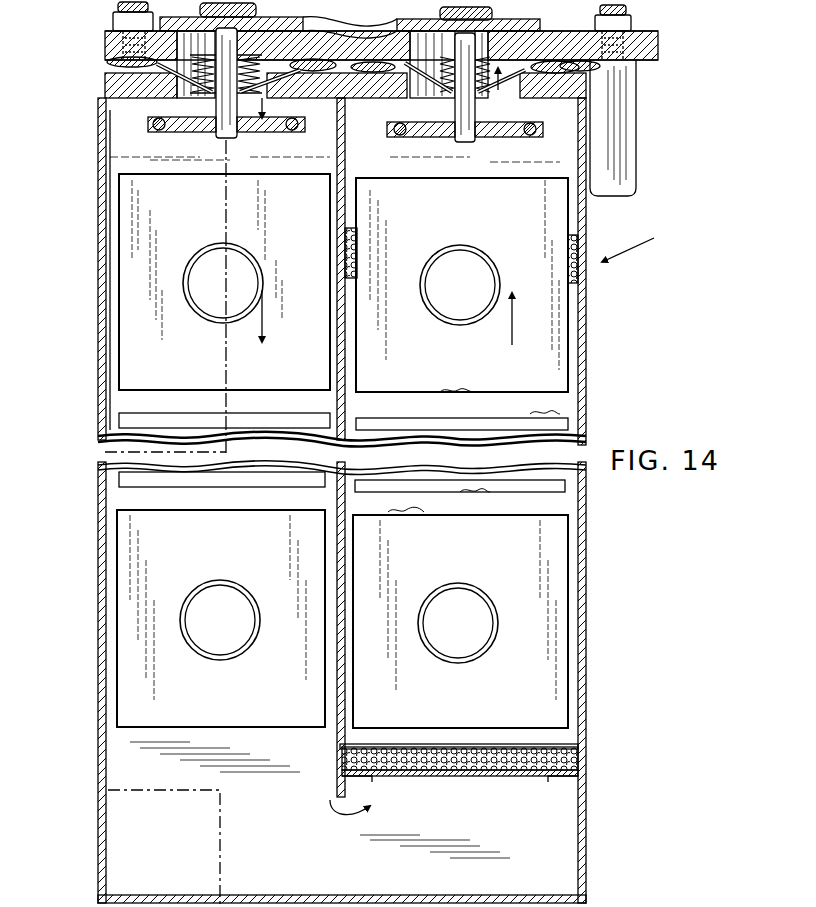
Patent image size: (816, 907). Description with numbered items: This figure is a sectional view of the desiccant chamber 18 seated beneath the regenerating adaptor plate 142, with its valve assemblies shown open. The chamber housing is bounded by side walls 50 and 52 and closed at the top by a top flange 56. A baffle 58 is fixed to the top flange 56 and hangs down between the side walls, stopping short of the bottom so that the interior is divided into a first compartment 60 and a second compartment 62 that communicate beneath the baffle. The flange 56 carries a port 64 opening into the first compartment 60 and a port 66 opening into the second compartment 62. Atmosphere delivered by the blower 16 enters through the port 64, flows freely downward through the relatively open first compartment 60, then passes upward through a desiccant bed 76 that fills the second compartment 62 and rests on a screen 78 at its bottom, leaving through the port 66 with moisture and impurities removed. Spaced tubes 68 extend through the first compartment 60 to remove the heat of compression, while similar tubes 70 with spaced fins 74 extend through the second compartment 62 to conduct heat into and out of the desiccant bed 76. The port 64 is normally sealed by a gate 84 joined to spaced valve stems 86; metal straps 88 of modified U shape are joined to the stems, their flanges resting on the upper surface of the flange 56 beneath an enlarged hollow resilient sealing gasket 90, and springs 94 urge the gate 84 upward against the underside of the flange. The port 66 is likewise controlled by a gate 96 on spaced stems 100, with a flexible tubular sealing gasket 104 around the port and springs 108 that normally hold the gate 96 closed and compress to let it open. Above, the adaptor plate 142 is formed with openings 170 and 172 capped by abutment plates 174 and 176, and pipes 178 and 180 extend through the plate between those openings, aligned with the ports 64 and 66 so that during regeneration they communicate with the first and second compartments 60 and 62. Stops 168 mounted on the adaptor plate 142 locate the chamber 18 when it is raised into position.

The blower 16 is at (200, 10).
The desiccant chamber 18 is at (420, 565).
The side wall 50 is at (586, 322).
The side wall 52 is at (98, 175).
The top flange 56 is at (110, 82).
The baffle 58 is at (337, 200).
The first compartment 60 is at (110, 235).
The second compartment 62 is at (550, 745).
The port 64 is at (175, 80).
The port 66 is at (520, 95).
The tubes 68 is at (205, 317).
The tubes 70 is at (445, 322).
The fins 74 is at (563, 375).
The desiccant bed 76 is at (578, 282).
The screen 78 is at (500, 776).
The gate 84 is at (275, 132).
The valve stems 86 is at (235, 138).
The metal straps 88 is at (200, 93).
The sealing gasket 90 is at (107, 62).
The springs 94 is at (200, 98).
The gate 96 is at (410, 137).
The stems 100 is at (465, 142).
The sealing gasket 104 is at (600, 72).
The springs 108 is at (475, 40).
The adaptor plate 142 is at (658, 42).
The stops 168 is at (625, 118).
The openings 170 is at (113, 26).
The openings 172 is at (420, 19).
The abutment plate 174 is at (330, 33).
The abutment plate 176 is at (595, 22).
The pipe 178 is at (320, 17).
The pipe 180 is at (492, 12).